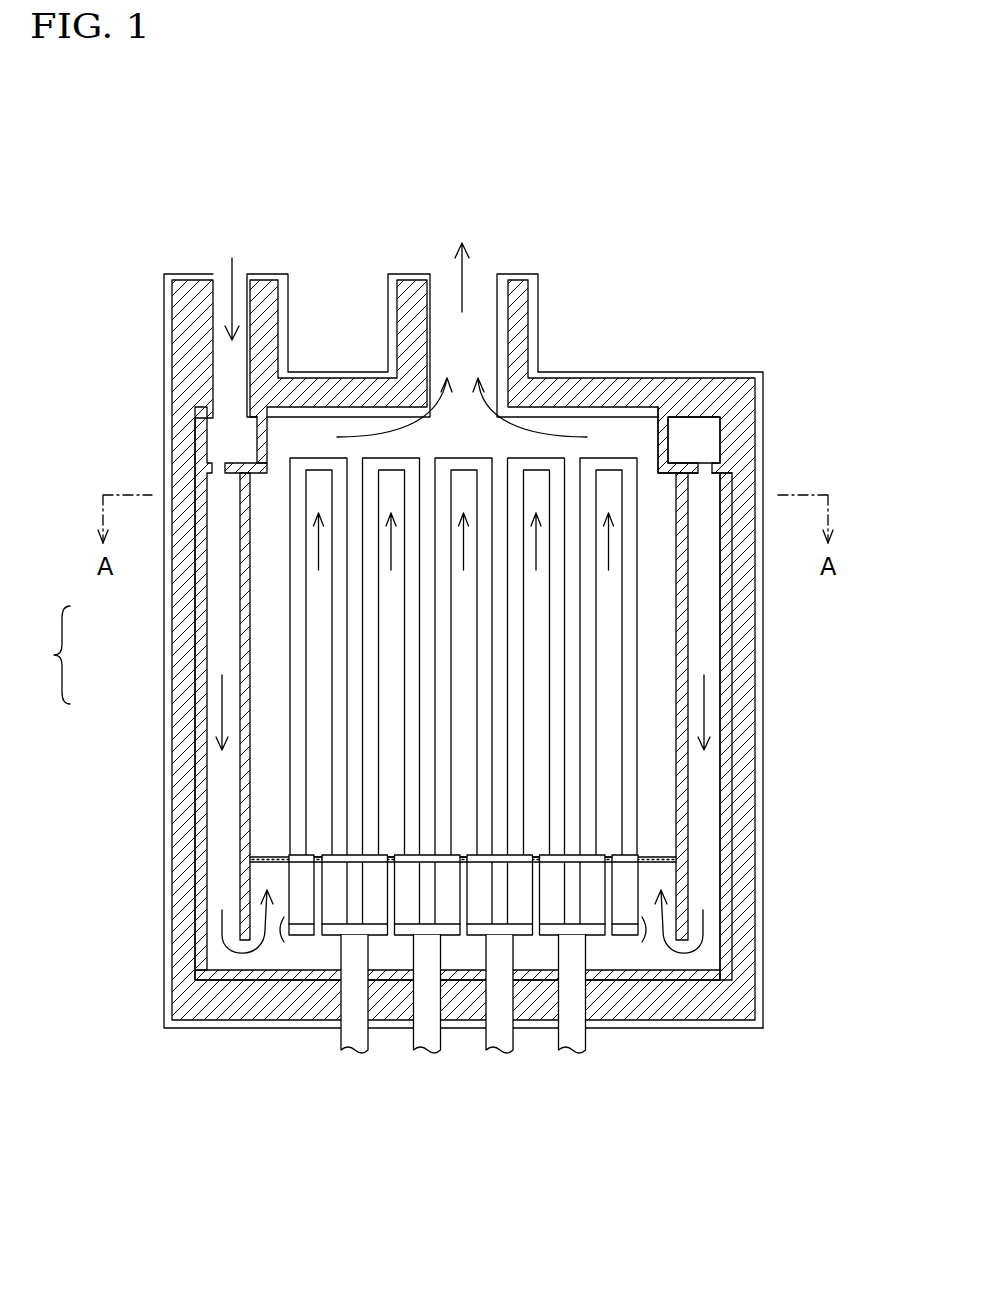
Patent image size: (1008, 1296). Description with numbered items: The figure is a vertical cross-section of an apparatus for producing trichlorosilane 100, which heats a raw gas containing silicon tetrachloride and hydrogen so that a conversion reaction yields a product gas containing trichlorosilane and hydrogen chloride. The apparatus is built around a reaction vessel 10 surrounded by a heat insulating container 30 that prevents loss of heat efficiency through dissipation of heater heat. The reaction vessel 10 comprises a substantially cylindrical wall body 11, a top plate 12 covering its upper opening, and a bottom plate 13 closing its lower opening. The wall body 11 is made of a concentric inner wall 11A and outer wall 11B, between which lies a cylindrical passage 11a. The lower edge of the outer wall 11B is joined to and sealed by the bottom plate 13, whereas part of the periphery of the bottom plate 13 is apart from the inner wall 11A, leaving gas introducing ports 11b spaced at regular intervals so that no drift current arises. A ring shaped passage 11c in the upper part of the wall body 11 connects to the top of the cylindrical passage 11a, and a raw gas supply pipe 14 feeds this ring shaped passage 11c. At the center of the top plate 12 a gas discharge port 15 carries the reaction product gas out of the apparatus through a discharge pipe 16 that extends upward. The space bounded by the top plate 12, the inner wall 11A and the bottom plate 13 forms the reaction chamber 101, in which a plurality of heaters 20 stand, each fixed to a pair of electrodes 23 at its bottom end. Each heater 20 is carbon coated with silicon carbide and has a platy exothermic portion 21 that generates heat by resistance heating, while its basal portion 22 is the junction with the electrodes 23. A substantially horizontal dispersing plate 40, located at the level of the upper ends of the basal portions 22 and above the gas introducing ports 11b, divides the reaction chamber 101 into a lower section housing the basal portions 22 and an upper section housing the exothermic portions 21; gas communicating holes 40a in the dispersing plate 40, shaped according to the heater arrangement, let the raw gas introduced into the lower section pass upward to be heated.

The apparatus for producing trichlorosilane 100 is at (237, 222).
The reaction vessel 10 is at (163, 970).
The wall body 11 is at (358, 688).
The inner wall 11A is at (240, 560).
The outer wall 11B is at (200, 645).
The cylindrical passage 11a is at (222, 822).
The gas introducing ports 11b is at (680, 957).
The ring shaped passage 11c is at (707, 427).
The top plate 12 is at (575, 410).
The bottom plate 13 is at (228, 973).
The raw gas supply pipe 14 is at (210, 347).
The gas discharge port 15 is at (487, 350).
The discharge pipe 16 is at (432, 288).
The heaters 20 is at (610, 655).
The exothermic portions 21 is at (627, 612).
The basal portion 22 is at (483, 910).
The electrodes 23 is at (568, 1038).
The heat insulating container 30 is at (757, 412).
The dispersing plate 40 is at (258, 870).
The gas communicating holes 40a is at (393, 862).
The reaction chamber 101 is at (267, 757).